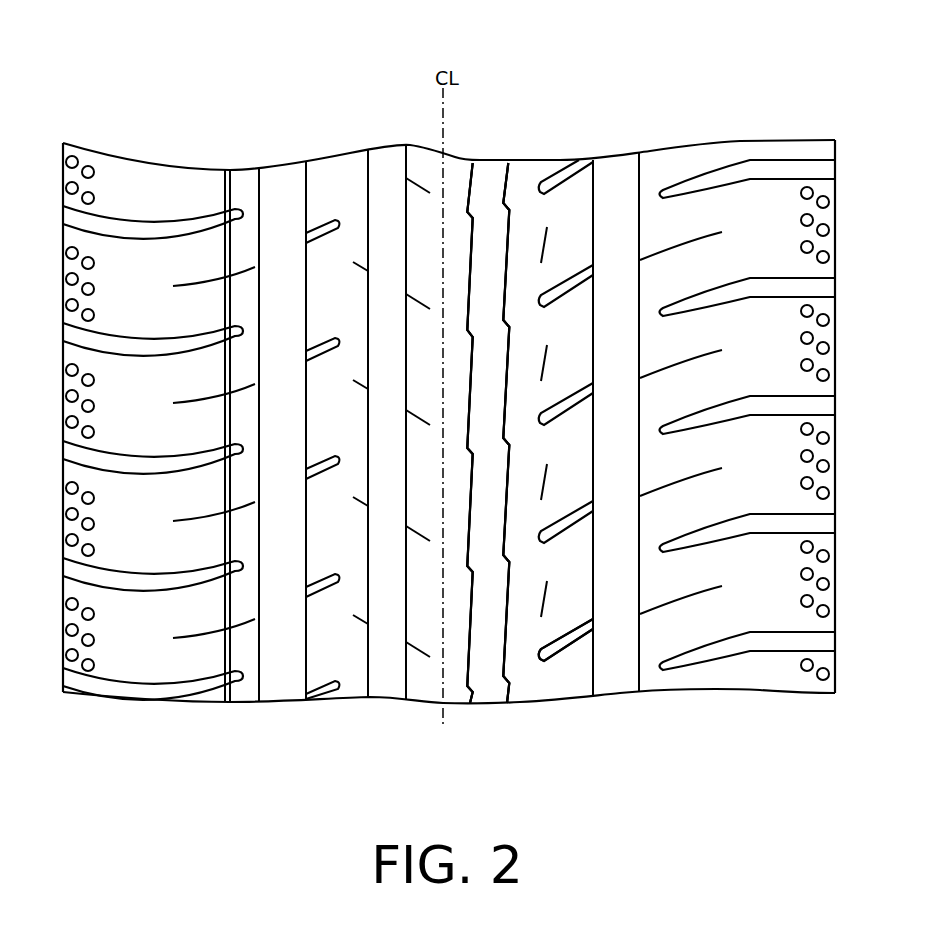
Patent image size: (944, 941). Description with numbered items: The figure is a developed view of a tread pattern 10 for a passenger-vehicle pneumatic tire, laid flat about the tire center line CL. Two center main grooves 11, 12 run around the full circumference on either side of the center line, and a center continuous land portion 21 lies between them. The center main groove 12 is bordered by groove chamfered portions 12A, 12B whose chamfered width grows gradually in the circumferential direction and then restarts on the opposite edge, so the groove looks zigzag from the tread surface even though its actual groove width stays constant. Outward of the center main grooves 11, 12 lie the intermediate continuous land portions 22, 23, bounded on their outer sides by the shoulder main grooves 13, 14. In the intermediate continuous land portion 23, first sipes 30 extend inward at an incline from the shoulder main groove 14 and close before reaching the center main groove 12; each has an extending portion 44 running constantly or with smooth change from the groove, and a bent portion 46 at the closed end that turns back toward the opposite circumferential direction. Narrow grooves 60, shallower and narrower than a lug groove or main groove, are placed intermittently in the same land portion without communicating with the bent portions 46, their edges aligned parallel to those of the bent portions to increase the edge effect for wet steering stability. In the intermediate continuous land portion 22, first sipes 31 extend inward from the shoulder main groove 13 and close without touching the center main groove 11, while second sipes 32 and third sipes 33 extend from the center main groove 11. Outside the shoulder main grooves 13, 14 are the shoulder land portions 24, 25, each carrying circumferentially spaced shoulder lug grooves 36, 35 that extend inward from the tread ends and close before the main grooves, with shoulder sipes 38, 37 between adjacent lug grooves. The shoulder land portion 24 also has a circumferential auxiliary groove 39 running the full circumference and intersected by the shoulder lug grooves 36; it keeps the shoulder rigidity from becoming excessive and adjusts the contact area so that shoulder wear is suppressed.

The tread pattern 10 is at (636, 60).
The center main groove 11 is at (390, 190).
The center main groove 12 is at (493, 187).
The groove chamfered portion 12A is at (505, 530).
The groove chamfered portion 12B is at (467, 530).
The shoulder main groove 13 is at (290, 166).
The shoulder main groove 14 is at (618, 188).
The center continuous land portion 21 is at (415, 662).
The intermediate continuous land portion 22 is at (351, 665).
The intermediate continuous land portion 23 is at (567, 670).
The shoulder land portion 24 is at (128, 658).
The shoulder land portion 25 is at (677, 676).
The first sipe 30 is at (563, 272).
The first sipe 31 is at (336, 218).
The second sipe 32 is at (362, 258).
The third sipe 33 is at (421, 186).
The shoulder lug groove 35 is at (723, 172).
The shoulder lug groove 36 is at (150, 228).
The shoulder sipe 37 is at (667, 245).
The shoulder sipe 38 is at (253, 262).
The circumferential auxiliary groove 39 is at (226, 168).
The extending portion 44 is at (553, 605).
The bent portion 46 is at (552, 672).
The narrow groove 60 is at (552, 484).